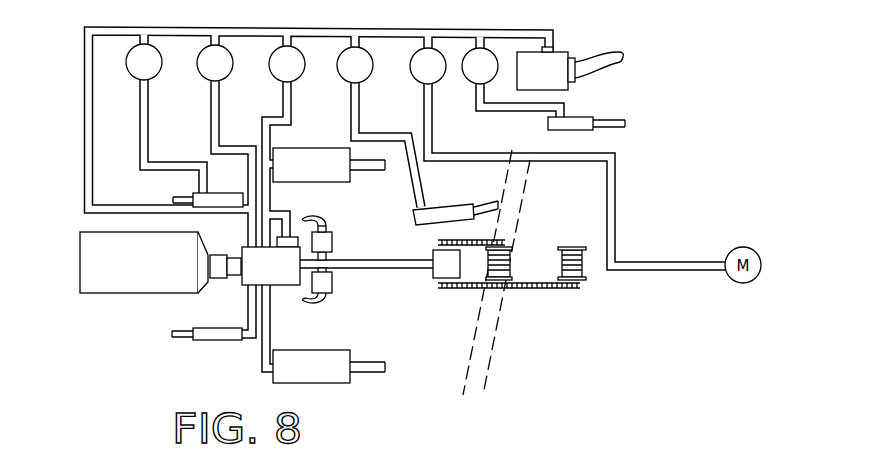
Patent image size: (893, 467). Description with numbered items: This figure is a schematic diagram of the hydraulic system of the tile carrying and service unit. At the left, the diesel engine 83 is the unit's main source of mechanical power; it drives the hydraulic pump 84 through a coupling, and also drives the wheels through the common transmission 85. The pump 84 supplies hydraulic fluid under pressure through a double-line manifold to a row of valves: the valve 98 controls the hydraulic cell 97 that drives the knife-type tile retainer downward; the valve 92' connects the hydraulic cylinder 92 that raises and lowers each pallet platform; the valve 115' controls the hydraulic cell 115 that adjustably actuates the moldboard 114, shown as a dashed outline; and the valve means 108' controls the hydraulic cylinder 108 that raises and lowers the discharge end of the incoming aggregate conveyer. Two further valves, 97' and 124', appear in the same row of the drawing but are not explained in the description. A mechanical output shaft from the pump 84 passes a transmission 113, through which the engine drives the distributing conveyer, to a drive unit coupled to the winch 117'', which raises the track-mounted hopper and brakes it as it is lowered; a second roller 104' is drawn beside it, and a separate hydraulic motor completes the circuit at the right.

The valve 98 is at (152, 38).
The valve 97' is at (216, 43).
The valve 92' is at (287, 43).
The valve 115' is at (356, 45).
The valve 124' is at (430, 45).
The valve means 108' is at (542, 48).
The hydraulic cylinder 108 is at (586, 108).
The hydraulic cell 97 is at (207, 269).
The hydraulic cylinder 92 is at (329, 265).
The diesel engine 83 is at (95, 240).
The common transmission 85 is at (245, 256).
The hydraulic pump 84 is at (253, 277).
The transmission 113 is at (334, 243).
The hydraulic cell 115 is at (455, 203).
The moldboard 114 is at (508, 217).
The winch 117'' is at (504, 280).
The roller 104' is at (573, 284).